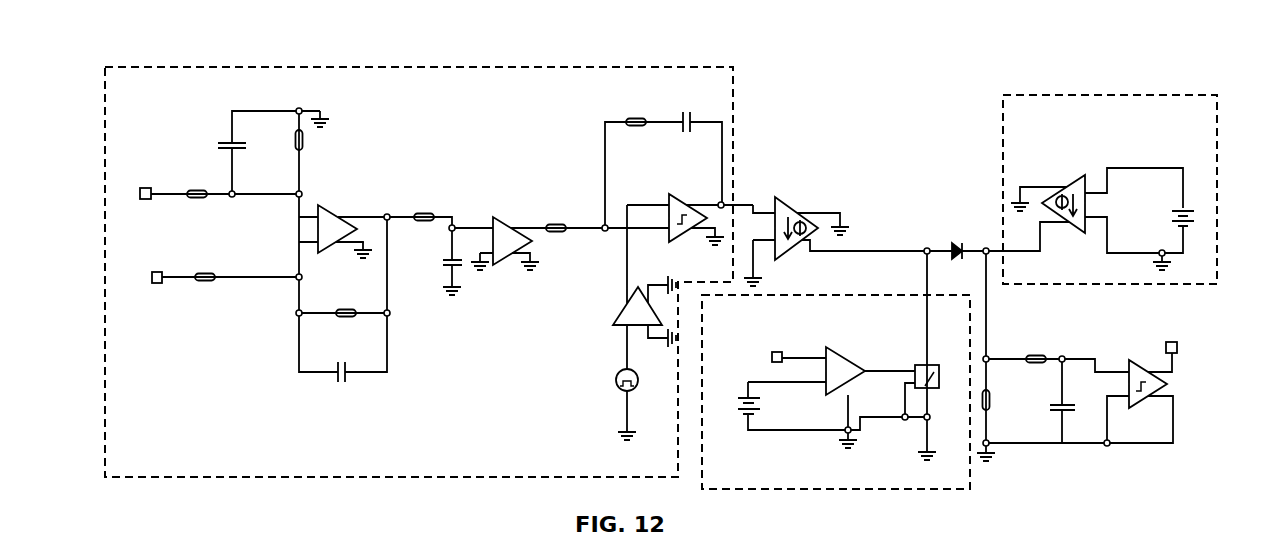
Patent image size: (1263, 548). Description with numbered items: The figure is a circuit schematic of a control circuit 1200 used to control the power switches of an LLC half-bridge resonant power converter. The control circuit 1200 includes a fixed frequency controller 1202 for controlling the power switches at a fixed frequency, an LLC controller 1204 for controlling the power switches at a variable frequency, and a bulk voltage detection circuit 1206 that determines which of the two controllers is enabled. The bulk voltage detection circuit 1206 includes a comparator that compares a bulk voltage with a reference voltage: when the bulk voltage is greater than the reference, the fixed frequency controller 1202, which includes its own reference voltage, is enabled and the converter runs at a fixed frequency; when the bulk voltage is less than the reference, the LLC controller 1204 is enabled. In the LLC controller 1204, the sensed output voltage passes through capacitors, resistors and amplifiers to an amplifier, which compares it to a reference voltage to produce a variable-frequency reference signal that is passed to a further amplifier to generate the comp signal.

The control circuit 1200 is at (834, 72).
The fixed frequency controller 1202 is at (1142, 95).
The LLC controller 1204 is at (648, 66).
The bulk voltage detection circuit 1206 is at (888, 489).